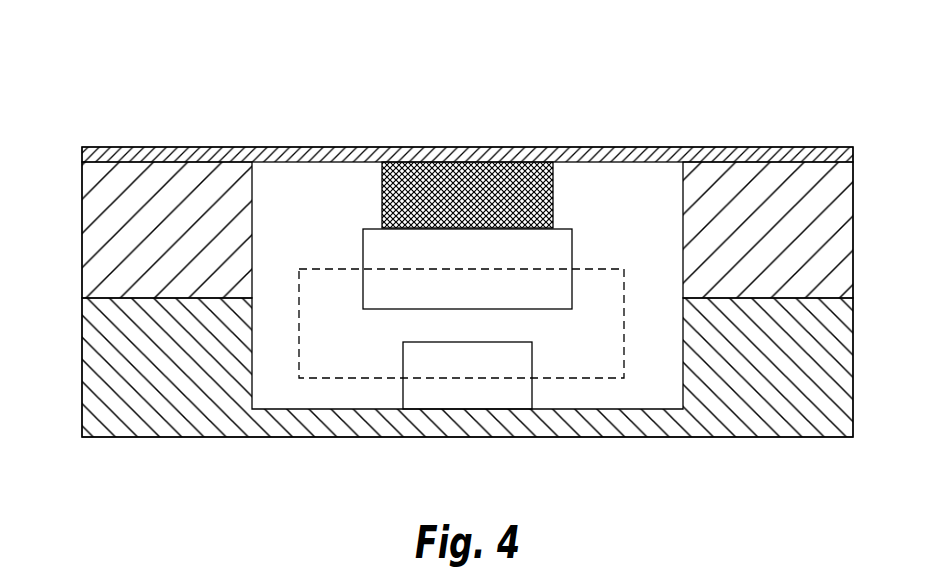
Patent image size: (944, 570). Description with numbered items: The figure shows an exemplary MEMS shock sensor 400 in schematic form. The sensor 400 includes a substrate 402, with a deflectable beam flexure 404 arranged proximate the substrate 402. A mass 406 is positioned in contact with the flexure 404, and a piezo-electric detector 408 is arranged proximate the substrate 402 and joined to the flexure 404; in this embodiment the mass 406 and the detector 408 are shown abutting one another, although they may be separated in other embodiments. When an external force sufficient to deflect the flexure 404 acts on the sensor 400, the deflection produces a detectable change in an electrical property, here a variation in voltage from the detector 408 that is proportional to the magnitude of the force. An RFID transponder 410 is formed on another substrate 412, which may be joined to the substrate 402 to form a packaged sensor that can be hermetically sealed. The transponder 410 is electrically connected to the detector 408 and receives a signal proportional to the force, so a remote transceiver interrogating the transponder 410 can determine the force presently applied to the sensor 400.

The MEMS shock sensor 400 is at (663, 76).
The substrate 402 is at (81, 250).
The deflectable beam flexure 404 is at (322, 147).
The mass 406 is at (553, 190).
The piezo-electric detector 408 is at (558, 247).
The RFID transponder 410 is at (508, 393).
The another substrate 412 is at (203, 422).